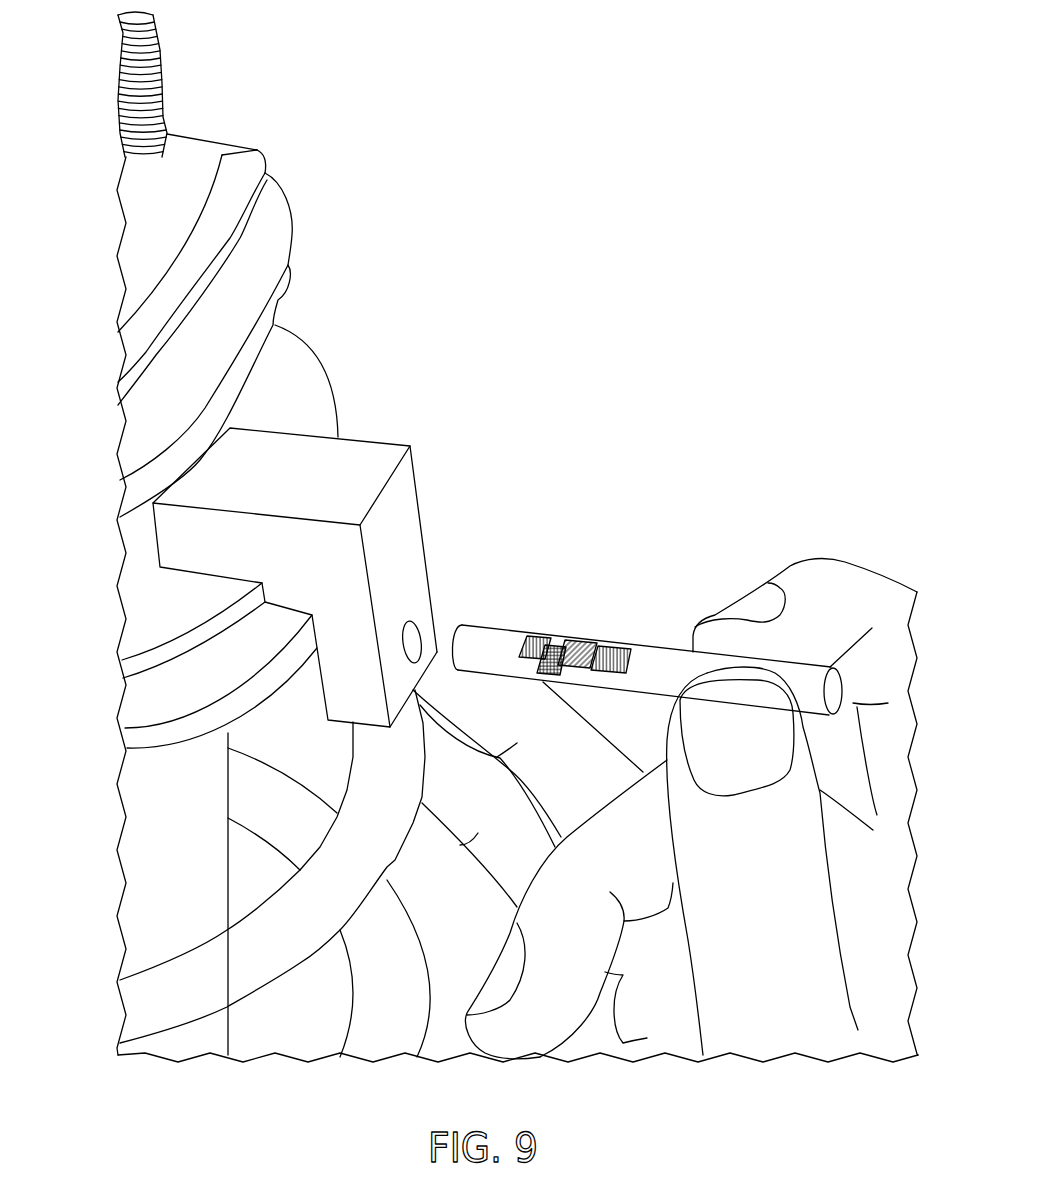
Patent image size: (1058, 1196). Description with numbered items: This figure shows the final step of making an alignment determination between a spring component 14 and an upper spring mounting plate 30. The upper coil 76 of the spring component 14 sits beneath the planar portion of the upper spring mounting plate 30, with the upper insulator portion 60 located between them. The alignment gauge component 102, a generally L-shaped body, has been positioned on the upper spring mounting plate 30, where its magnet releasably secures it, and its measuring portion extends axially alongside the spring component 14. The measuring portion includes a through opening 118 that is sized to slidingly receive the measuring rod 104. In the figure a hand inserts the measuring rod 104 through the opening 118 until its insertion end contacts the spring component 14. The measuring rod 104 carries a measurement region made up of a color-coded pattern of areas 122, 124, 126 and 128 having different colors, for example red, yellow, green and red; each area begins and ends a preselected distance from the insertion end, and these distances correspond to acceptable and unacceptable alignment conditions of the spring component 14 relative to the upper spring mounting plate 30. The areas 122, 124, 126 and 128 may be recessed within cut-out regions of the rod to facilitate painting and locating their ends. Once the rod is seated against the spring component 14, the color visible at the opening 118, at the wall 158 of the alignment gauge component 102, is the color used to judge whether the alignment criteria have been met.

The spring component 14 is at (113, 945).
The upper spring mounting plate 30 is at (123, 670).
The upper insulator portion 60 is at (125, 728).
The upper coil 76 is at (163, 753).
The alignment gauge component 102 is at (380, 427).
The wall 158 is at (410, 480).
The through opening 118 is at (408, 622).
The measuring rod 104 is at (620, 545).
The area 122 is at (535, 636).
The area 124 is at (545, 645).
The area 126 is at (585, 640).
The area 128 is at (625, 648).